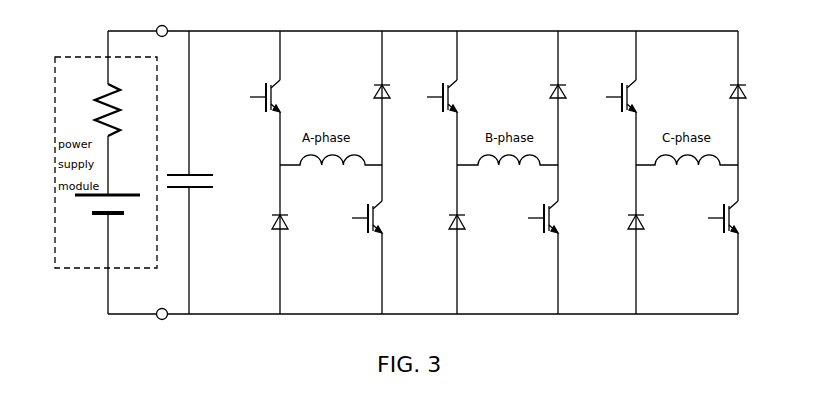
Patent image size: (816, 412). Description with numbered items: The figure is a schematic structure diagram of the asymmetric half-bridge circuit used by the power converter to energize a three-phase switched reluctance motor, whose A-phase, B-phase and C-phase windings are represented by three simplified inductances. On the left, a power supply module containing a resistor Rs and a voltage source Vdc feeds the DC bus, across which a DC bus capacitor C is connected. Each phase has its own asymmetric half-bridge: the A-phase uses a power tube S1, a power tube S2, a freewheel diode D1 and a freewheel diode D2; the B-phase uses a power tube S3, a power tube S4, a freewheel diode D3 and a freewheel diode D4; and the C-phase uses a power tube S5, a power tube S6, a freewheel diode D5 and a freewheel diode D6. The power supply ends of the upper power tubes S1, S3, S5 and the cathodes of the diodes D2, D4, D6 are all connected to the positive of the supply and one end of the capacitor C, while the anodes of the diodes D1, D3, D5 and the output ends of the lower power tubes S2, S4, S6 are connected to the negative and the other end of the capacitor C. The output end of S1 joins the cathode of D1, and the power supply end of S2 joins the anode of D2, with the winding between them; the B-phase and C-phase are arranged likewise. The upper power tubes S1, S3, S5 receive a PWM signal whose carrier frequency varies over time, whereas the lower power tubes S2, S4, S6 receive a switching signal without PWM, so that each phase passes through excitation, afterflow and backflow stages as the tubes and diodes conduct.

The resistor of power supply module Rs is at (120, 110).
The DC voltage source Vdc is at (108, 222).
The DC bus capacitor C is at (191, 172).
The power tube S1 is at (260, 98).
The power tube S2 is at (357, 239).
The power tube S3 is at (435, 98).
The power tube S4 is at (530, 239).
The power tube S5 is at (613, 98).
The power tube S6 is at (711, 239).
The freewheel diode D1 is at (265, 239).
The freewheel diode D2 is at (364, 98).
The freewheel diode D3 is at (440, 239).
The freewheel diode D4 is at (540, 98).
The freewheel diode D5 is at (622, 239).
The freewheel diode D6 is at (720, 98).